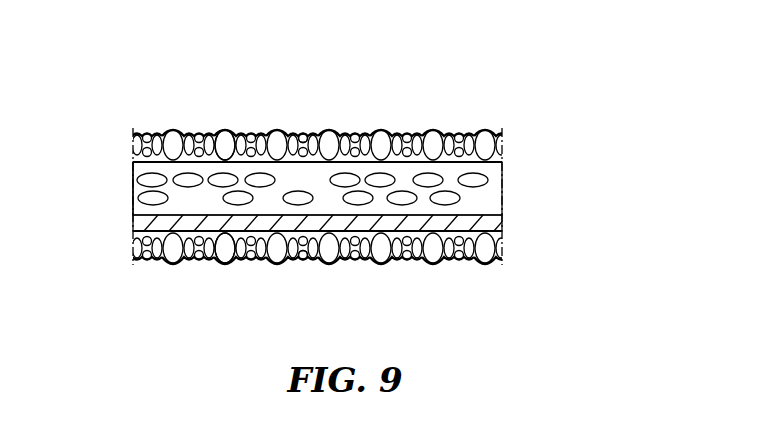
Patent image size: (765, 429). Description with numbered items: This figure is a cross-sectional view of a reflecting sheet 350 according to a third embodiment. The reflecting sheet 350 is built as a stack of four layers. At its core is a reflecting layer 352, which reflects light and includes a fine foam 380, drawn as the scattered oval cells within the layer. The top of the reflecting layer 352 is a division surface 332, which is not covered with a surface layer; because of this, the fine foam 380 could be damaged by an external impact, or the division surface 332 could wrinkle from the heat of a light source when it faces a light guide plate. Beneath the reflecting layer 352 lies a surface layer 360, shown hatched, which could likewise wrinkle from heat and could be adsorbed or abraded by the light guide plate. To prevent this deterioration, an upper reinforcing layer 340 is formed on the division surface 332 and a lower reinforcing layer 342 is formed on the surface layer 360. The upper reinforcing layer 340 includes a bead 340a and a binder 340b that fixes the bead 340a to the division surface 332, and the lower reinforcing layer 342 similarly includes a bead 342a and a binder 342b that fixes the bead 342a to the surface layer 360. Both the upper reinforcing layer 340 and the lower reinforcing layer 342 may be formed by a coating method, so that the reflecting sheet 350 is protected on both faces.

The division surface 332 is at (143, 167).
The upper reinforcing layer 340 is at (297, 78).
The bead 340a is at (224, 132).
The binder 340b is at (299, 133).
The lower reinforcing layer 342 is at (297, 316).
The bead 342a is at (224, 262).
The binder 342b is at (299, 261).
The reflecting sheet 350 is at (556, 162).
The reflecting layer 352 is at (359, 245).
The surface layer 360 is at (393, 223).
The fine foam 380 is at (445, 198).